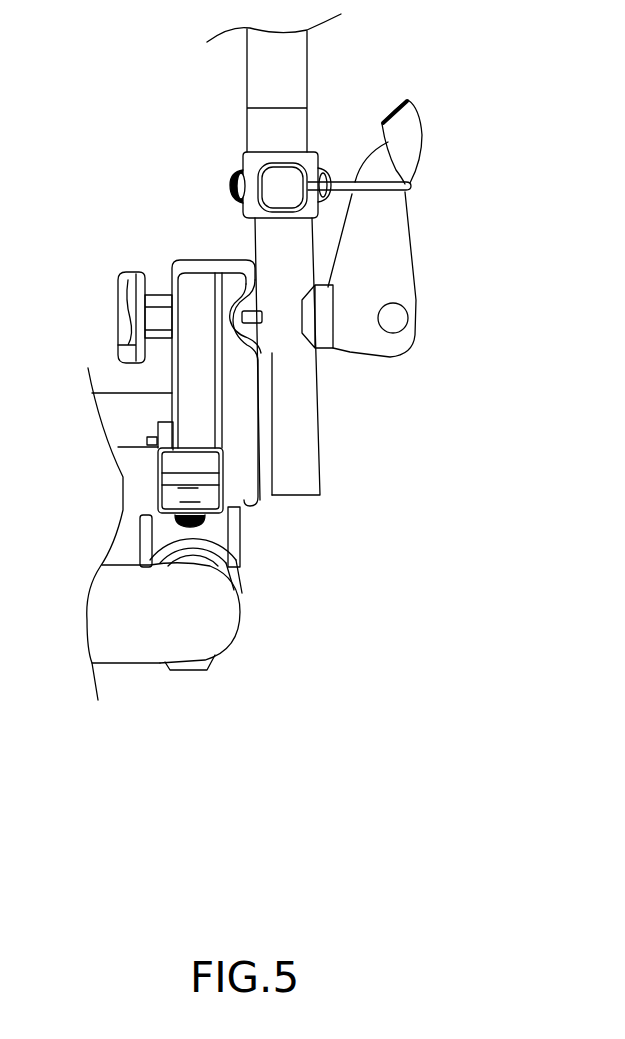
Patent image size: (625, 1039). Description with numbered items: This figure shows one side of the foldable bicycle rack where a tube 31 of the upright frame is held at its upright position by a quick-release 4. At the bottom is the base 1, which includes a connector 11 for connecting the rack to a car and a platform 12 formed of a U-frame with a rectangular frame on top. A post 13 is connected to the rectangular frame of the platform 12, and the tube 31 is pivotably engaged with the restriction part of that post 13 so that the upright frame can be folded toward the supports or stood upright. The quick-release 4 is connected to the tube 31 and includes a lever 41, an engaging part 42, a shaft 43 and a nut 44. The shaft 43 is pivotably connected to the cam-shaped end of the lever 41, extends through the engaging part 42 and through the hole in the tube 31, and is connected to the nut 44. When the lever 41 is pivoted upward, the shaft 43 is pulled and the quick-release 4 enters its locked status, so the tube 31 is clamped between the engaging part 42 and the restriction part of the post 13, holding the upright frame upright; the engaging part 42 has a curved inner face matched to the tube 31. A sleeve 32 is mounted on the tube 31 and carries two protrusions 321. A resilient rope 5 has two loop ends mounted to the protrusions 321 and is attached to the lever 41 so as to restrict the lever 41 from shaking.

The base 1 is at (390, 595).
The connector 11 is at (222, 530).
The platform 12 is at (192, 615).
The post 13 is at (187, 295).
The tube 31 is at (303, 445).
The sleeve 32 is at (243, 152).
The protrusion 321 is at (260, 160).
The quick-release 4 is at (427, 252).
The lever 41 is at (403, 288).
The engaging part 42 is at (322, 347).
The shaft 43 is at (250, 317).
The nut 44 is at (123, 312).
The resilient rope 5 is at (412, 189).